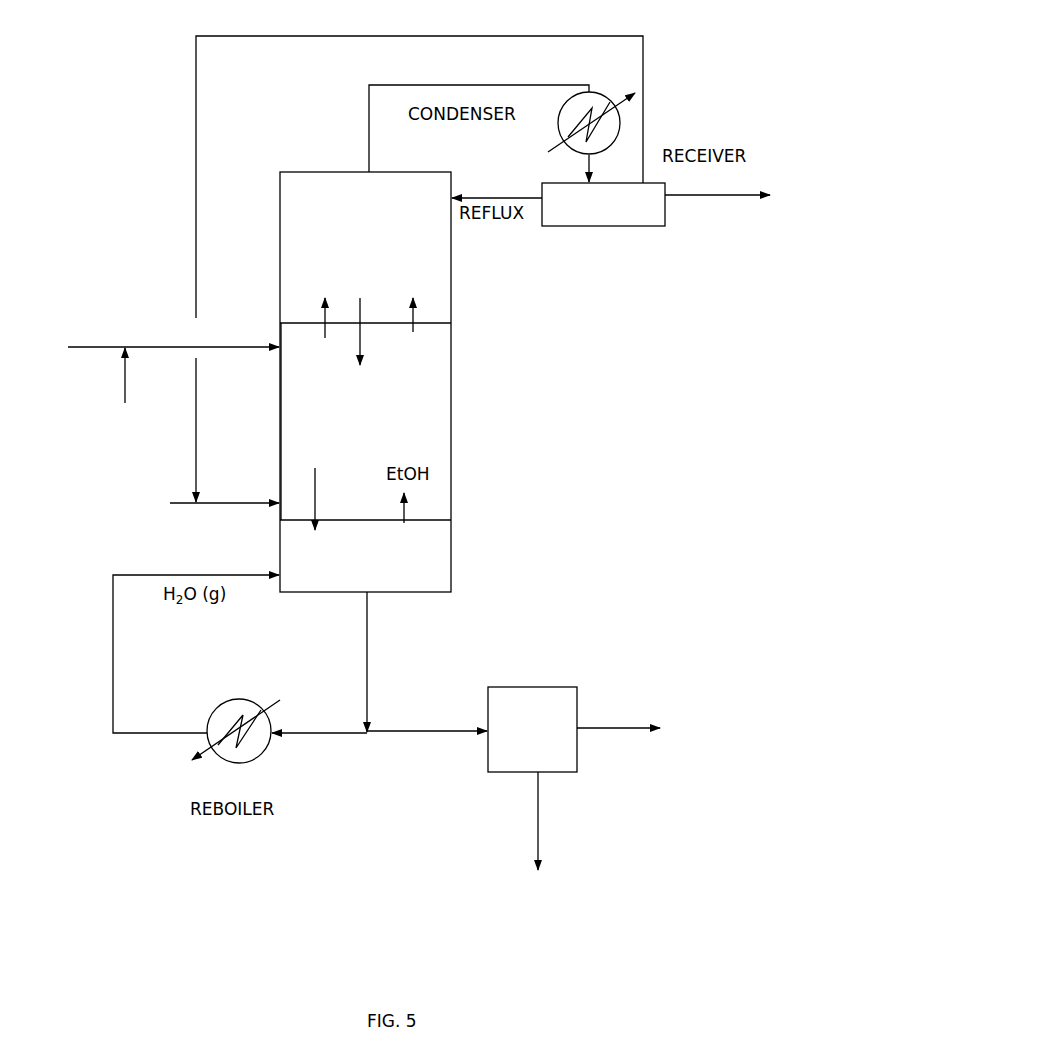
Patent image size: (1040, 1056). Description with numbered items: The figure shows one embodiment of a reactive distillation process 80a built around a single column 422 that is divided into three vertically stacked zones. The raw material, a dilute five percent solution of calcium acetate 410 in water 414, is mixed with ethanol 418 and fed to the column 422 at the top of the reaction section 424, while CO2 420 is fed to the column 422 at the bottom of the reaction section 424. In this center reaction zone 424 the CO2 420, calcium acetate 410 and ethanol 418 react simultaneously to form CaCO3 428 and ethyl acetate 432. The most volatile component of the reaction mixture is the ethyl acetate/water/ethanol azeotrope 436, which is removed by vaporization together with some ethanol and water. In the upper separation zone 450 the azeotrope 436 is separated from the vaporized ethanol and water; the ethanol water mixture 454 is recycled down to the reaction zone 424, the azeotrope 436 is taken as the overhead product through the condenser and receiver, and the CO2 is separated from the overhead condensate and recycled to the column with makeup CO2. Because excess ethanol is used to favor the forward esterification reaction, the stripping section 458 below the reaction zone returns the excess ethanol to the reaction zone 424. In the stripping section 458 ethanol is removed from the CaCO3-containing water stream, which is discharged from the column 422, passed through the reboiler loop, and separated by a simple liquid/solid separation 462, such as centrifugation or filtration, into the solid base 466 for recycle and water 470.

The reactive distillation system 80a is at (116, 82).
The calcium acetate 410 is at (120, 272).
The water 414 is at (159, 327).
The ethanol 418 is at (121, 387).
The CO2 420 is at (161, 447).
The column 422 is at (432, 382).
The reaction section 424 is at (436, 433).
The CaCO3 428 is at (370, 600).
The ethyl acetate 432 is at (359, 314).
The ethyl acetate/water/ethanol azeotrope 436 is at (770, 246).
The separation zone 450 is at (433, 305).
The ethanol water mixture 454 is at (363, 360).
The stripping section 458 is at (440, 575).
The liquid/solid separation 462 is at (513, 713).
The solid base 466 is at (539, 841).
The water 470 is at (658, 728).